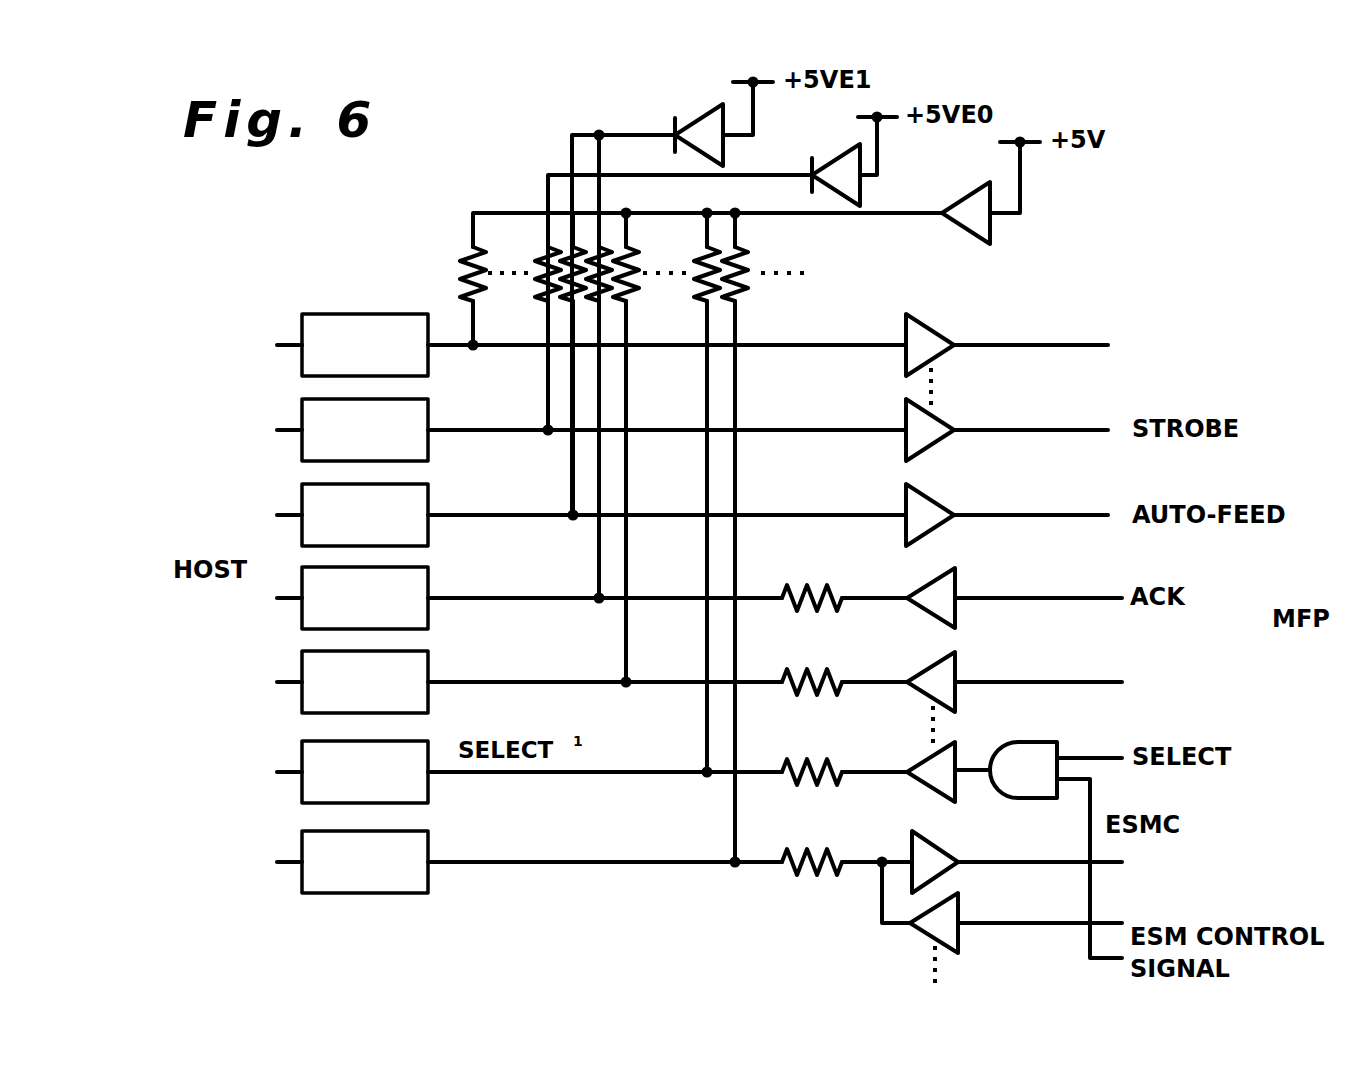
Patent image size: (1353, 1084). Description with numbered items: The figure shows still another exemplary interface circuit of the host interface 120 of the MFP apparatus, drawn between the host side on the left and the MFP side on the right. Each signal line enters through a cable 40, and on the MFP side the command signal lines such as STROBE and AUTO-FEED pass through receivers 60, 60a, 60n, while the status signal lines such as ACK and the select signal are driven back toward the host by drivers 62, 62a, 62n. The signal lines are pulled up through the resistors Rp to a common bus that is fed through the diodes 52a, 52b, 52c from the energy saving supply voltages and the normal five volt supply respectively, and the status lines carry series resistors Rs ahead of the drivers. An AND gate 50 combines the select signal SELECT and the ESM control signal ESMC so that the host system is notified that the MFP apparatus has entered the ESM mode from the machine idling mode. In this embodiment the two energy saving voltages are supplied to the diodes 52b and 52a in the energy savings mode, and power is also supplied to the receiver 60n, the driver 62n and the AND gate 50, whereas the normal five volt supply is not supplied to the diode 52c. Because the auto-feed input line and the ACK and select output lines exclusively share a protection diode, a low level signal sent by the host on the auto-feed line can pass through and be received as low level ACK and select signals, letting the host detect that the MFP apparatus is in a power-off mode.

The cable 40 is at (336, 313).
The AND gate 50 is at (1058, 741).
The diode 52a is at (691, 120).
The diode 52b is at (840, 158).
The diode 52c is at (960, 197).
The receiver 60 is at (959, 509).
The receiver 60a is at (934, 328).
The receiver 60n is at (958, 421).
The driver 62 is at (956, 584).
The driver 62a is at (956, 674).
The driver 62n is at (958, 743).
The host interface 120 is at (1152, 290).
The pull-up resistor Rp is at (583, 274).
The series resistor Rs is at (812, 715).